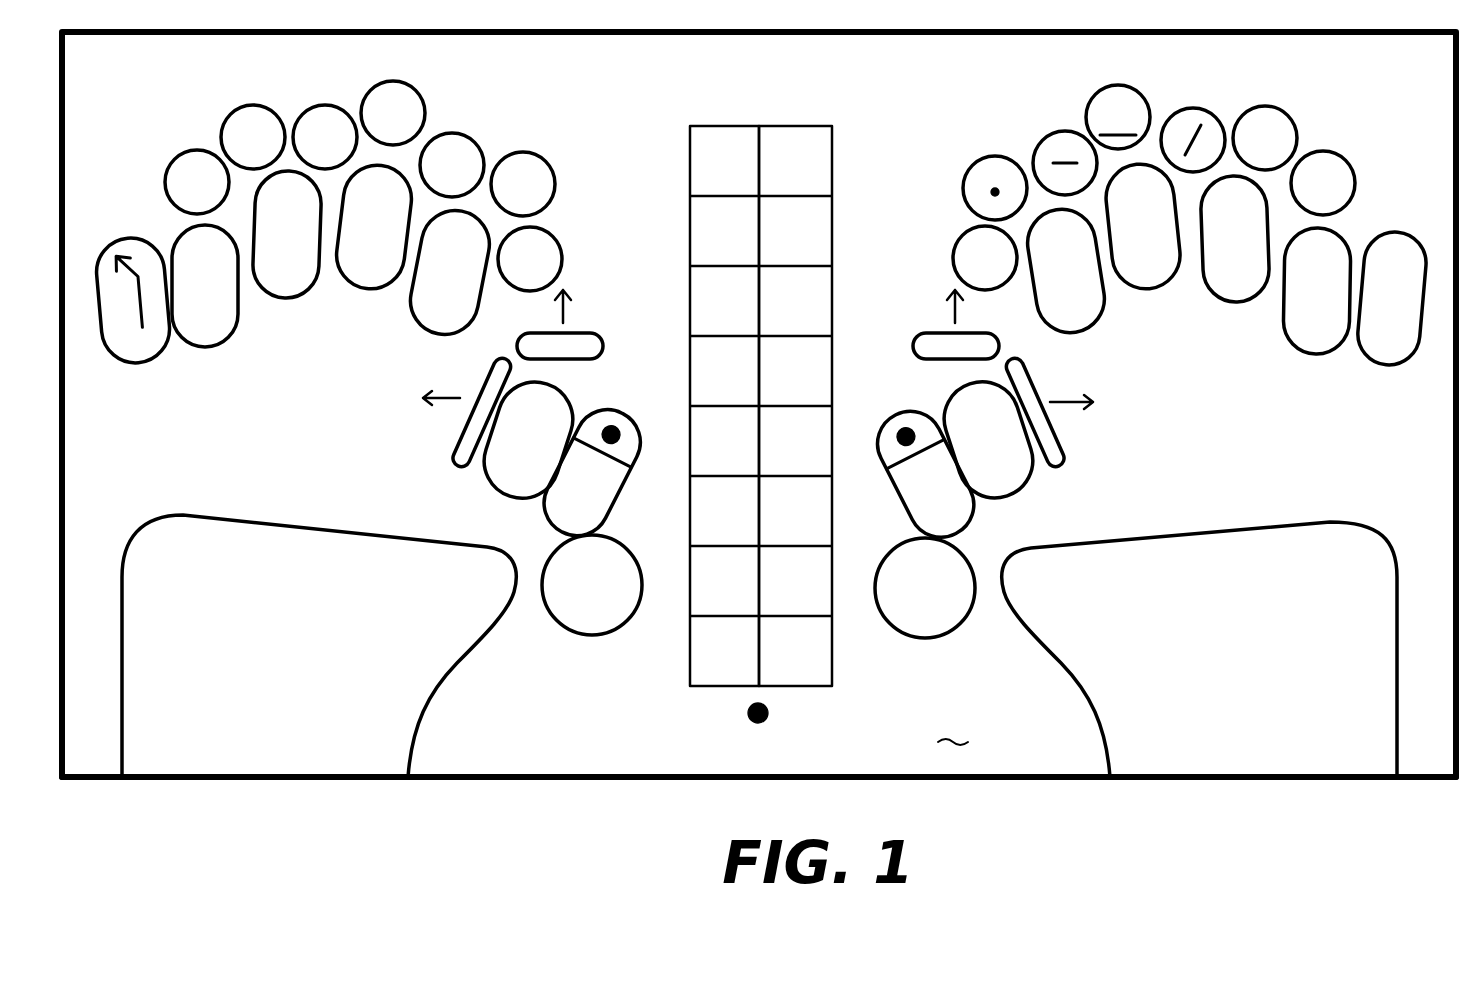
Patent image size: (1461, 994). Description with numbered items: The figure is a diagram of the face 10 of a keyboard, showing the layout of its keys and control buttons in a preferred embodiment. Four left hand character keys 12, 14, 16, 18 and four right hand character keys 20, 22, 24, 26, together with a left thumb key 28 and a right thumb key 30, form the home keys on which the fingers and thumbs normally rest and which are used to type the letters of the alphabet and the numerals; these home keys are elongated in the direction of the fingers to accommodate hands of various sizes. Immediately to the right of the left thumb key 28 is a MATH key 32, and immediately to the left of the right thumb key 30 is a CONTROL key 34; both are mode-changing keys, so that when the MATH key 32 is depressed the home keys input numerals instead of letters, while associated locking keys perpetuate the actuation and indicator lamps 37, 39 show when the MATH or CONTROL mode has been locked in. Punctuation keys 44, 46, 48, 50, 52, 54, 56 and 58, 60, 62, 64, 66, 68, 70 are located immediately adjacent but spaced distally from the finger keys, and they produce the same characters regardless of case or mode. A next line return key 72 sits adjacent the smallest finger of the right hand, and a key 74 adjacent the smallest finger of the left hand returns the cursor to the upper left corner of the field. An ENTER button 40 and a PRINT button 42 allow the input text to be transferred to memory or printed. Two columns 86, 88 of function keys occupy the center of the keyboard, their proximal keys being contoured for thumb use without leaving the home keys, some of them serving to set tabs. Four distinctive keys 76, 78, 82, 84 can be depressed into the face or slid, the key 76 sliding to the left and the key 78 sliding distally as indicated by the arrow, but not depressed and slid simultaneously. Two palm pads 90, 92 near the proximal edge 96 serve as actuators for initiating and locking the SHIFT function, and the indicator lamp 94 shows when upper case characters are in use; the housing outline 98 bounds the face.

The face of the keyboard 10 is at (759, 404).
The left hand character key 12 is at (207, 348).
The left hand character key 14 is at (295, 299).
The left hand character key 16 is at (368, 288).
The left hand character key 18 is at (425, 331).
The right hand character key 20 is at (1084, 335).
The right hand character key 22 is at (1147, 290).
The right hand character key 24 is at (1224, 303).
The right hand character key 26 is at (1318, 355).
The left thumb key 28 is at (500, 495).
The right thumb key 30 is at (1023, 498).
The MATH key 32 is at (606, 439).
The CONTROL key 34 is at (912, 444).
The indicator lamp 37 is at (611, 434).
The indicator lamp 39 is at (906, 436).
The ENTER button 40 is at (587, 623).
The PRINT button 42 is at (930, 625).
The punctuation key 44 is at (180, 155).
The punctuation key 46 is at (240, 108).
The punctuation key 48 is at (328, 105).
The punctuation key 50 is at (400, 80).
The punctuation key 52 is at (470, 135).
The punctuation key 54 is at (550, 158).
The punctuation key 56 is at (553, 235).
The punctuation key 58 is at (960, 238).
The punctuation key 60 is at (970, 162).
The punctuation key 62 is at (1045, 135).
The punctuation key 64 is at (1113, 86).
The punctuation key 66 is at (1215, 108).
The punctuation key 68 is at (1295, 110).
The punctuation key 70 is at (1350, 160).
The next line return key 72 is at (1408, 233).
The key 74 is at (135, 238).
The key 76 is at (455, 432).
The key 78 is at (585, 333).
The key 82 is at (928, 333).
The key 84 is at (1060, 435).
The column of keys 86 is at (751, 101).
The column of keys 88 is at (791, 103).
The palm pad 90 is at (280, 538).
The palm pad 92 is at (1287, 540).
The indicator lamp 94 is at (750, 718).
The proximal edge 96 is at (595, 774).
The housing 98 is at (915, 35).